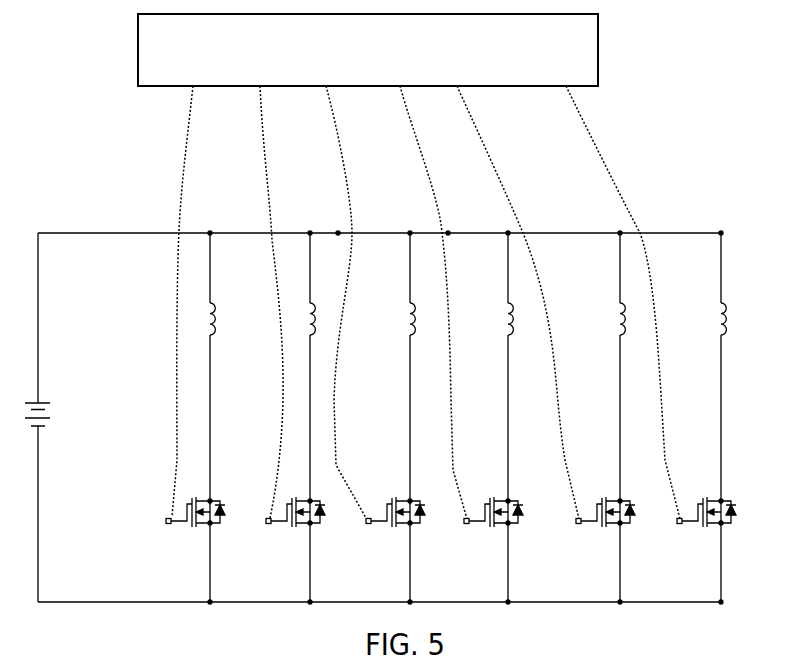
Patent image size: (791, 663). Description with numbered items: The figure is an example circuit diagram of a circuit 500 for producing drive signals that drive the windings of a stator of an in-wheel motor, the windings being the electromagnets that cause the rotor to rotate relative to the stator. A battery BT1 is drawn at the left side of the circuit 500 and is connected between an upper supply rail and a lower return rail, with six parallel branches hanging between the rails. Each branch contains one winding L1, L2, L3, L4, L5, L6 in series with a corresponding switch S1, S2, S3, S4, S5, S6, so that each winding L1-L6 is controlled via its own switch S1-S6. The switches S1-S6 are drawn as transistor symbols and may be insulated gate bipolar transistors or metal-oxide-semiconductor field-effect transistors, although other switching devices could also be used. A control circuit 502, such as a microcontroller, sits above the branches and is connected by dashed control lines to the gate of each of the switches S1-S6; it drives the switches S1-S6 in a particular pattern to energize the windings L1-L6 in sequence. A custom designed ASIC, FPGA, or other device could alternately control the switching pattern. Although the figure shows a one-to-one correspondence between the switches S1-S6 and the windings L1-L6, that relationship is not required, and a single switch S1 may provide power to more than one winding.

The circuit 500 is at (110, 198).
The control circuit 502 is at (385, 72).
The battery BT1 is at (68, 414).
The winding L1 is at (224, 319).
The winding L2 is at (324, 319).
The winding L3 is at (424, 319).
The winding L4 is at (522, 319).
The winding L5 is at (634, 319).
The winding L6 is at (735, 319).
The switch S1 is at (190, 493).
The switch S2 is at (291, 493).
The switch S3 is at (392, 493).
The switch S4 is at (490, 493).
The switch S5 is at (603, 493).
The switch S6 is at (704, 493).